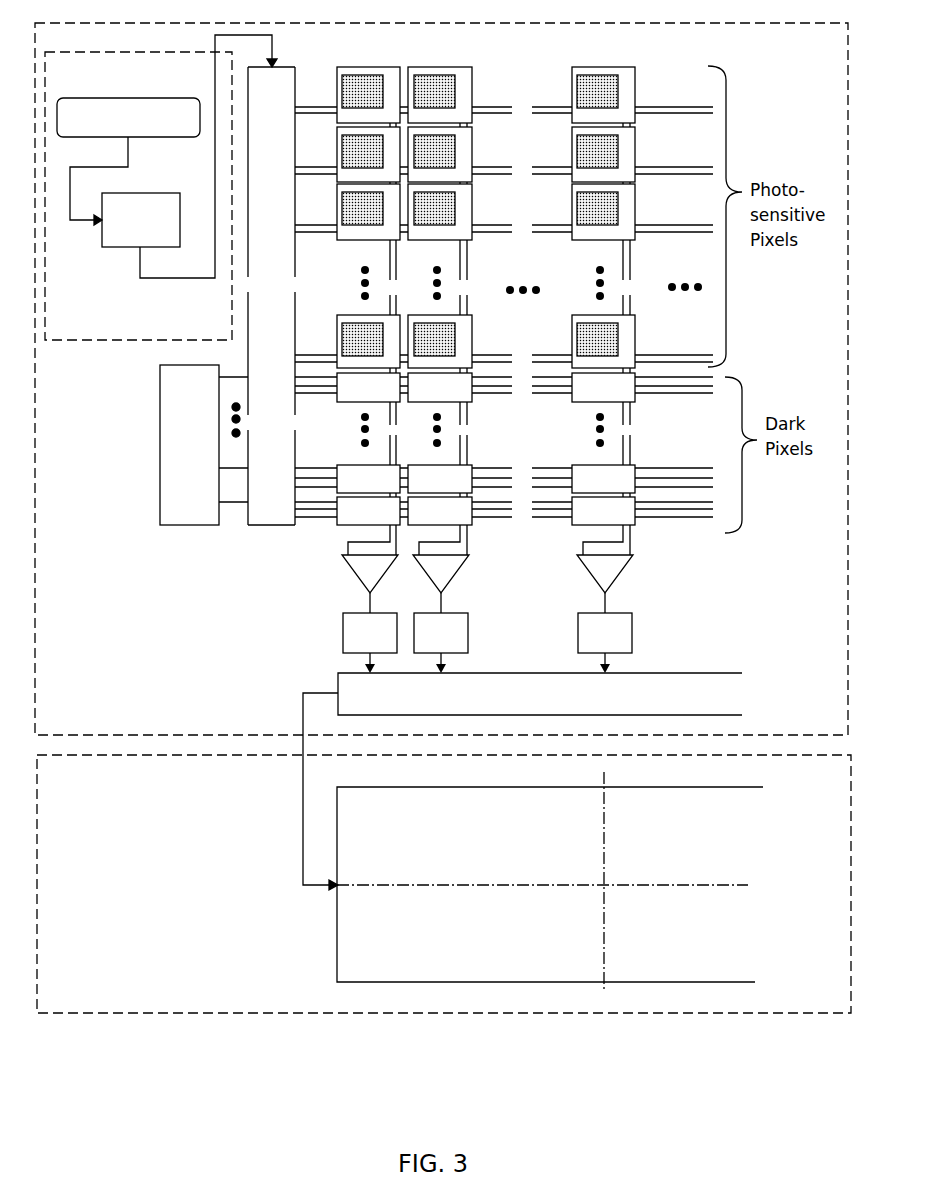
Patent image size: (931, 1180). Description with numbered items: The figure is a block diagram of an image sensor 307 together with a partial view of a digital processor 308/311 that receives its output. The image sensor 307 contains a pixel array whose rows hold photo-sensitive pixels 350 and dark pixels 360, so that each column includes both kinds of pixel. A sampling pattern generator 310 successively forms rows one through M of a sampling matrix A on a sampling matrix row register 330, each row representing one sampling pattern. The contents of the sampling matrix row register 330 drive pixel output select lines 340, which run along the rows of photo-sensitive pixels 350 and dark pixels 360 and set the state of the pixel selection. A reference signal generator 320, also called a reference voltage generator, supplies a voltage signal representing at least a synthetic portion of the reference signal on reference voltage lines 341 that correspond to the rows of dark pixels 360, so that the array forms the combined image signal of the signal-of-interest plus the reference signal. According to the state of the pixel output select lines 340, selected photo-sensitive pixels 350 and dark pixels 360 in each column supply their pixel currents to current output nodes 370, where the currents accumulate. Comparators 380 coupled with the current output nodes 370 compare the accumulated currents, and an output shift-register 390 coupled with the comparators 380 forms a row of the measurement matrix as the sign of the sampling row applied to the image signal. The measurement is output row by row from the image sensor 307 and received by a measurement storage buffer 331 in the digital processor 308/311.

The image sensor 307 is at (146, 718).
The digital processor 308 is at (444, 884).
The digital processor 311 is at (103, 833).
The sampling pattern generator 310 is at (98, 325).
The reference signal generator 320 is at (205, 508).
The sampling matrix row register 330 is at (288, 330).
The measurement storage buffer 331 is at (390, 966).
The pixel output select lines 340 is at (500, 106).
The reference voltage lines 341 is at (496, 394).
The photo-sensitive pixels 350 is at (363, 90).
The dark pixels 360 is at (350, 391).
The current output nodes 370 is at (468, 271).
The comparators 380 is at (361, 567).
The output shift-register 390 is at (388, 706).